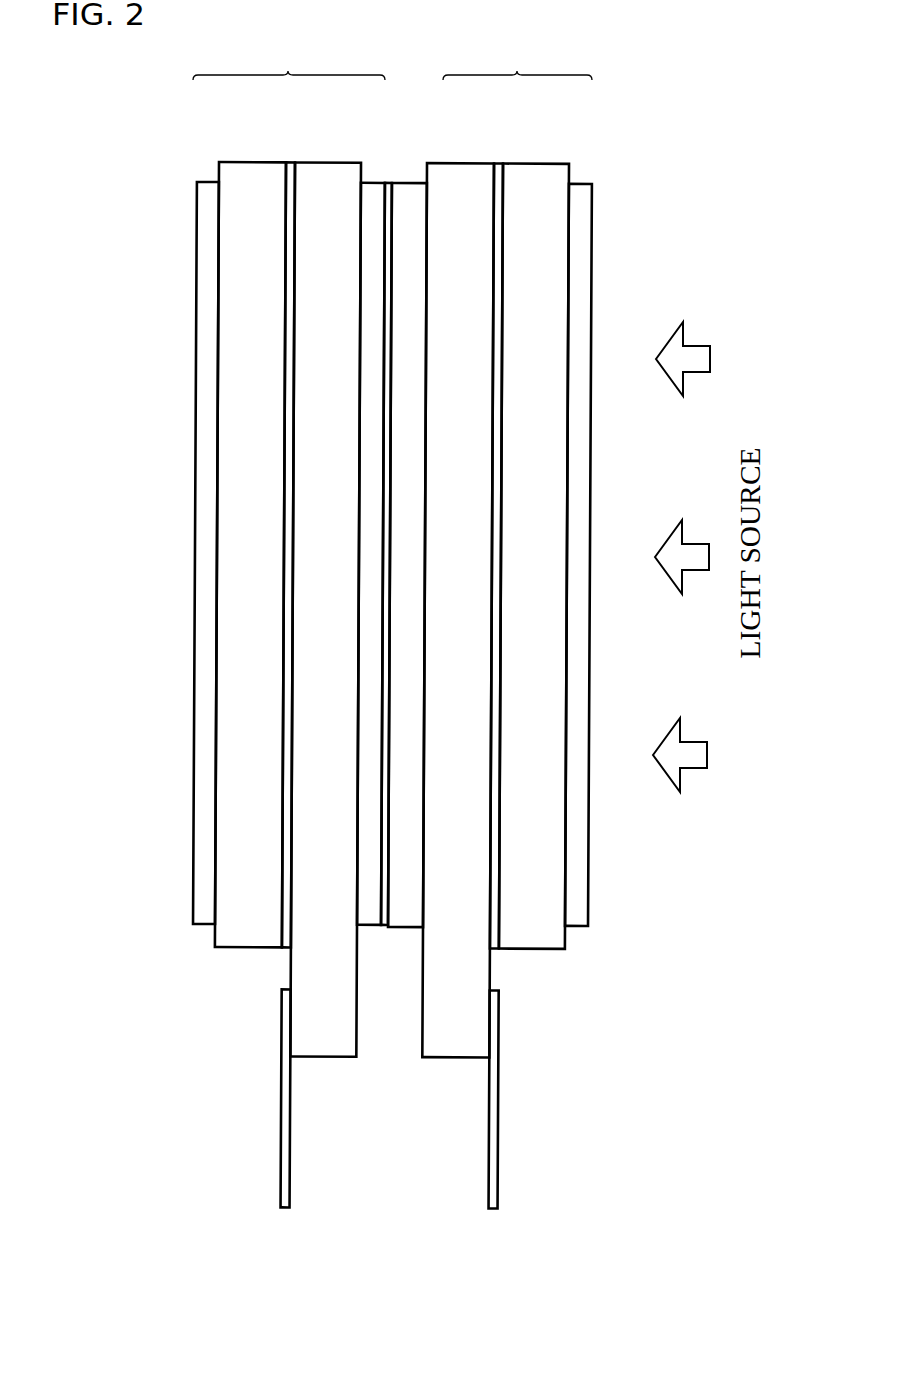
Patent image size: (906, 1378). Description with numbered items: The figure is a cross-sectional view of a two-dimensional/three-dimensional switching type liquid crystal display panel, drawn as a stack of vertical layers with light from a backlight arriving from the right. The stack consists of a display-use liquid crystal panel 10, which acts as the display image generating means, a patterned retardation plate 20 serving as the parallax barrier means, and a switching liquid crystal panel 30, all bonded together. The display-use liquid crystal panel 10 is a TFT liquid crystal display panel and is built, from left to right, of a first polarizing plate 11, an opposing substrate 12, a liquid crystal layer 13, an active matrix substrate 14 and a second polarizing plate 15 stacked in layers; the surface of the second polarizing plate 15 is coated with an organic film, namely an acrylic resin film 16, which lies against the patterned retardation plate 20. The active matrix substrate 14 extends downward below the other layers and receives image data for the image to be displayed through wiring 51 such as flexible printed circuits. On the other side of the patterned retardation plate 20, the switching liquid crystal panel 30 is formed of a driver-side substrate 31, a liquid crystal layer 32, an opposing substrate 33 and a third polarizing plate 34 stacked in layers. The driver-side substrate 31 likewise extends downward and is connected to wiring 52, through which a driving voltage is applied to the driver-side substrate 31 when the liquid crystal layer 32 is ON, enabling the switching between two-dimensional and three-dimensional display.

The display-use liquid crystal panel 10 is at (289, 60).
The first polarizing plate 11 is at (213, 182).
The opposing substrate 12 is at (265, 162).
The liquid crystal layer 13 is at (293, 162).
The active matrix substrate 14 is at (313, 162).
The second polarizing plate 15 is at (370, 182).
The acrylic resin film 16 is at (387, 182).
The patterned retardation plate 20 is at (413, 182).
The switching liquid crystal panel 30 is at (517, 60).
The driver-side substrate 31 is at (465, 162).
The liquid crystal layer 32 is at (502, 162).
The opposing substrate 33 is at (533, 162).
The third polarizing plate 34 is at (580, 182).
The wiring 51 is at (281, 1207).
The wiring 52 is at (489, 1207).